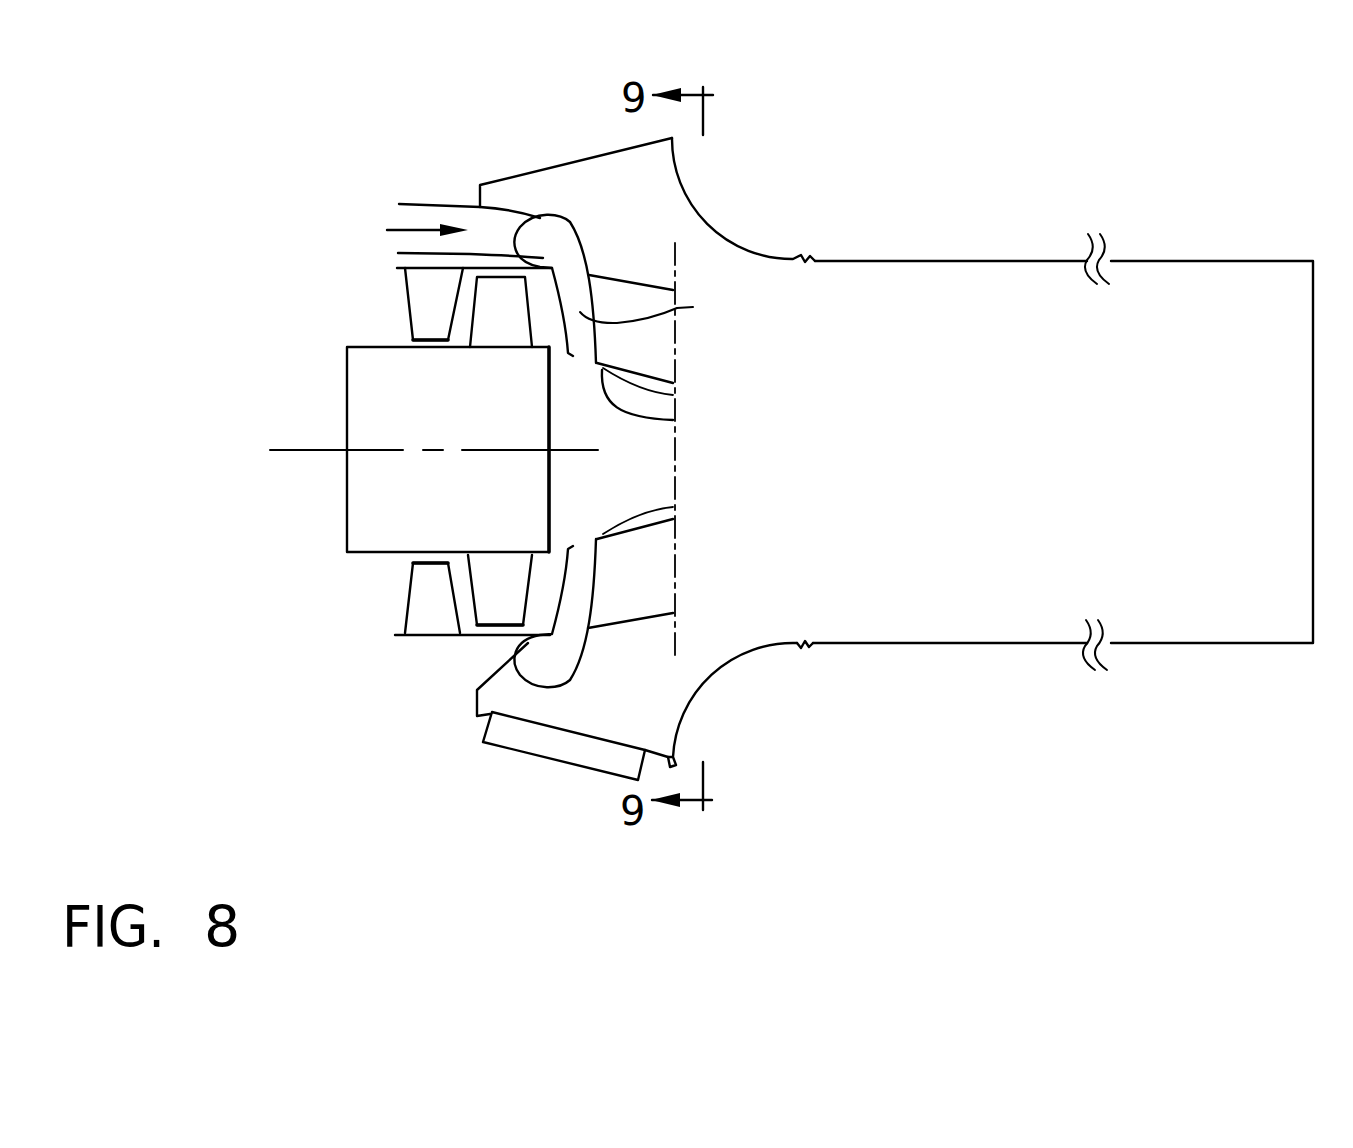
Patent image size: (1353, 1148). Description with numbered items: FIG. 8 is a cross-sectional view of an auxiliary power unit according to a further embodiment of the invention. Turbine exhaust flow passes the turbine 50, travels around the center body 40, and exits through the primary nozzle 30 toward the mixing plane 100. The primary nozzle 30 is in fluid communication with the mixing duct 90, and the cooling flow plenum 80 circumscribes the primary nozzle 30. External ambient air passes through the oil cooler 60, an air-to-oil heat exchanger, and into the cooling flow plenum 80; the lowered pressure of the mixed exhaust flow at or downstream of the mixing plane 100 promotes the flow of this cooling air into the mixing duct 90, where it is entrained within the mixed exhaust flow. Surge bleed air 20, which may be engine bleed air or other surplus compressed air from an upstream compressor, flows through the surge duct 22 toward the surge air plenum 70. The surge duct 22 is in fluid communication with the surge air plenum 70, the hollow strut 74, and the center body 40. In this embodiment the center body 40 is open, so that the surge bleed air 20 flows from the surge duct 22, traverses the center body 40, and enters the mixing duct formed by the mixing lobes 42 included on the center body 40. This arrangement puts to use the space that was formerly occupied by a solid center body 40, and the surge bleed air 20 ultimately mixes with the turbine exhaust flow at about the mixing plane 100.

The surge bleed air 20 is at (403, 227).
The surge duct 22 is at (448, 203).
The primary nozzle 30 is at (640, 283).
The center body 40 is at (582, 423).
The mixing lobes 42 is at (673, 420).
The turbine 50 is at (498, 590).
The oil cooler 60 is at (503, 747).
The surge air plenum 70 is at (555, 238).
The hollow strut 74 is at (654, 315).
The cooling flow plenum 80 is at (562, 195).
The mixing duct 90 is at (1156, 643).
The mixing plane 100 is at (677, 256).